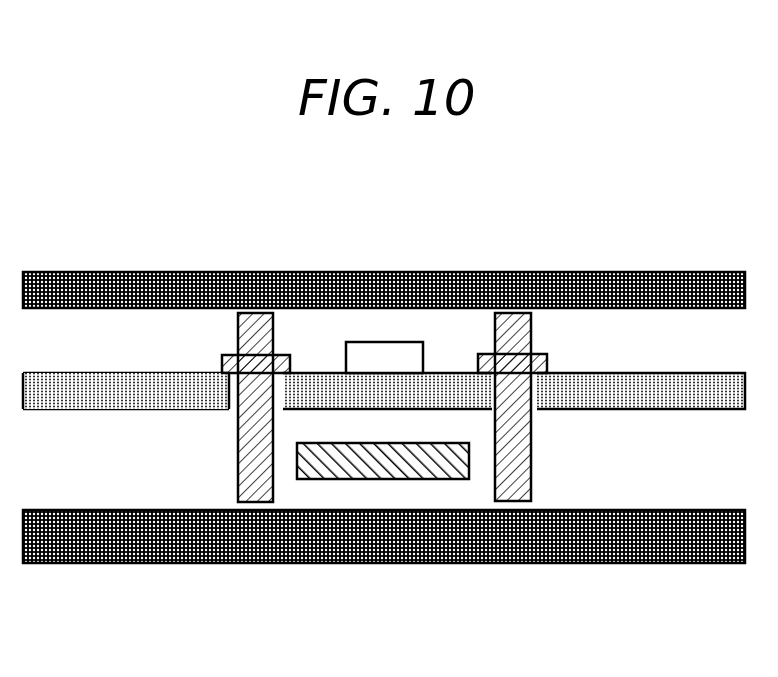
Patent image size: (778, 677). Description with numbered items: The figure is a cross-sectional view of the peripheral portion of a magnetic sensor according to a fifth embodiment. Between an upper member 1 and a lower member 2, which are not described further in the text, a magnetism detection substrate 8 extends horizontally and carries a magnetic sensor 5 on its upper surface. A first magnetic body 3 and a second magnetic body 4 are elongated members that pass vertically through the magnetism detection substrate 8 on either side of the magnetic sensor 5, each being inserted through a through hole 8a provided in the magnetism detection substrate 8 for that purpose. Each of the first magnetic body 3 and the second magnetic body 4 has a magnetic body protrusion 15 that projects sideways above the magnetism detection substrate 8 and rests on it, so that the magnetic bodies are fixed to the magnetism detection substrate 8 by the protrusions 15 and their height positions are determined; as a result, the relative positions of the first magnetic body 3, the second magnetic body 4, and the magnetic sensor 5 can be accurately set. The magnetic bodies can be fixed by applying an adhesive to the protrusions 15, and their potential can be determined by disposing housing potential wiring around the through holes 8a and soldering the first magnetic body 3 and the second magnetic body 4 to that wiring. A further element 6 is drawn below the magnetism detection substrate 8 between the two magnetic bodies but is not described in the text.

The upper substrate 1 is at (585, 271).
The lower substrate 2 is at (128, 551).
The first magnetic body 3 is at (251, 449).
The second magnetic body 4 is at (533, 452).
The magnetic sensor 5 is at (395, 357).
The electrode block 6 is at (402, 460).
The magnetism detection substrate 8 is at (128, 396).
The through hole 8a is at (229, 420).
The magnetic body protrusion 15 is at (232, 352).